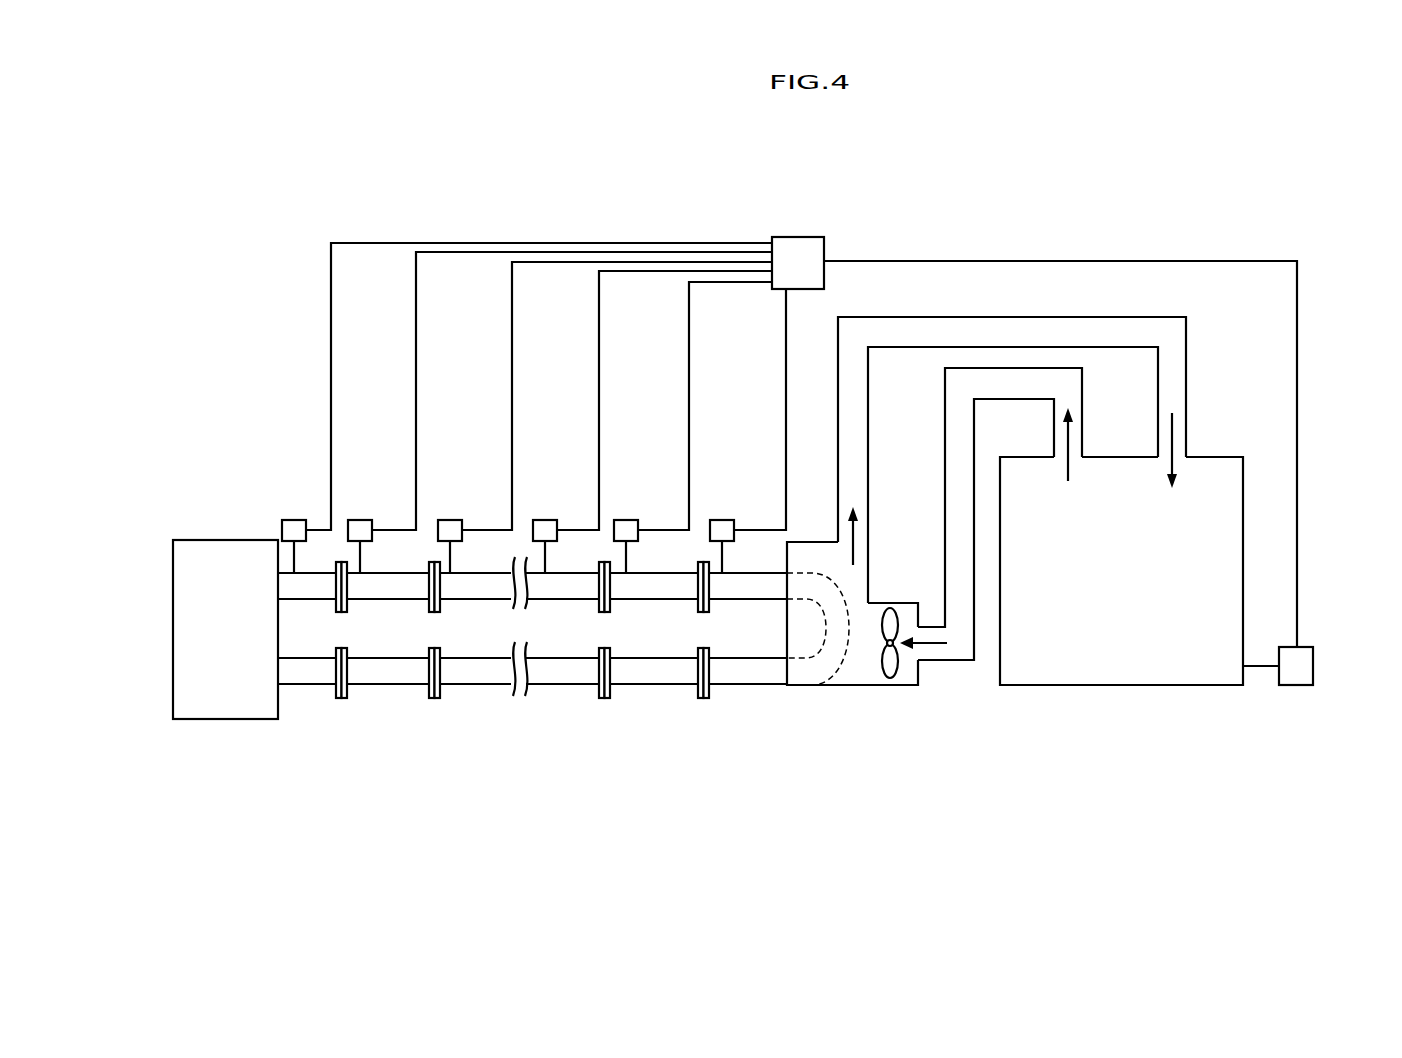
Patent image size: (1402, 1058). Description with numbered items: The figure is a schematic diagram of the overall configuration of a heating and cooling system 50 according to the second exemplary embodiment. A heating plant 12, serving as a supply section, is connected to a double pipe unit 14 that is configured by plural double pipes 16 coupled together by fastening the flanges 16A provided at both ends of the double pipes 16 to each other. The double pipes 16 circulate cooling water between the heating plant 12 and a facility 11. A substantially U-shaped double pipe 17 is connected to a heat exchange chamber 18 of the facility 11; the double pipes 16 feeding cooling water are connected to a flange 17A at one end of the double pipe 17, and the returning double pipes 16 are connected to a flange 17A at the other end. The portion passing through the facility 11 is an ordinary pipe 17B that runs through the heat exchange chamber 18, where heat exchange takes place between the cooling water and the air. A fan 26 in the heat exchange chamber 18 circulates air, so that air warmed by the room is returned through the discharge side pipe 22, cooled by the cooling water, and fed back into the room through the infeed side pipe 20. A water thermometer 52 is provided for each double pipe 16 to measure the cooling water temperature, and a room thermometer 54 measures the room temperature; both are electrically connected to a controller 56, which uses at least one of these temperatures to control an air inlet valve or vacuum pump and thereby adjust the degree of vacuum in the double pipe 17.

The facility 11 is at (1017, 723).
The heating plant 12 is at (217, 538).
The double pipe unit 14 is at (563, 660).
The double pipe 16 is at (382, 611).
The flange 16A is at (440, 588).
The double pipe 17 is at (779, 634).
The flange 17A is at (714, 590).
The ordinary pipe 17B is at (818, 573).
The heat exchange chamber 18 is at (841, 688).
The infeed side pipe 20 is at (1188, 383).
The discharge side pipe 22 is at (945, 437).
The fan 26 is at (898, 665).
The heating and cooling system 50 is at (458, 215).
The water thermometer 52 is at (292, 520).
The room thermometer 54 is at (1315, 660).
The controller 56 is at (797, 237).